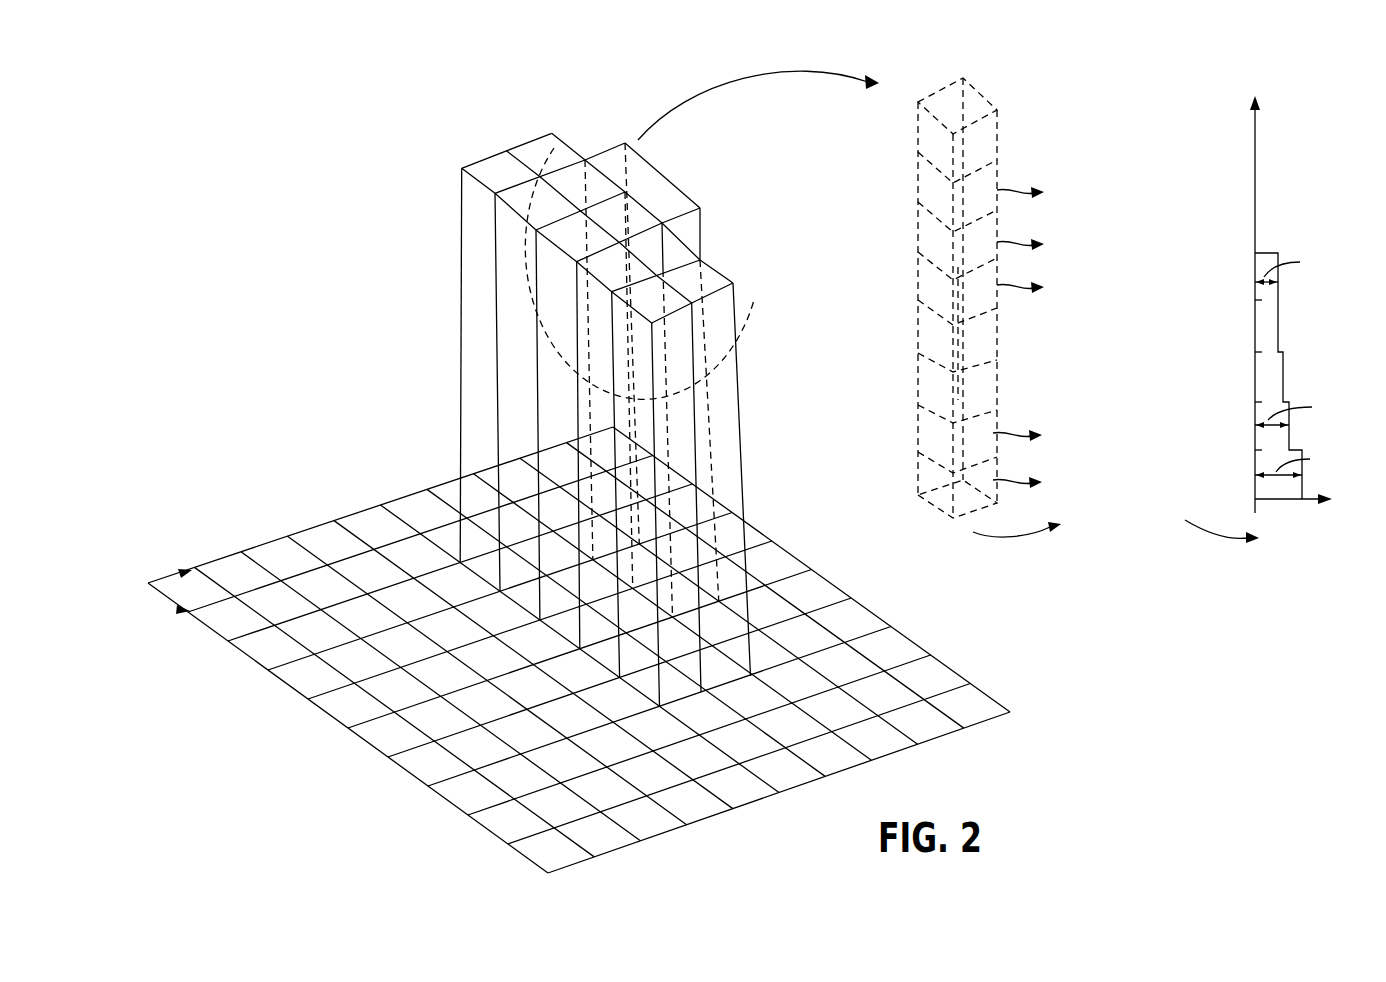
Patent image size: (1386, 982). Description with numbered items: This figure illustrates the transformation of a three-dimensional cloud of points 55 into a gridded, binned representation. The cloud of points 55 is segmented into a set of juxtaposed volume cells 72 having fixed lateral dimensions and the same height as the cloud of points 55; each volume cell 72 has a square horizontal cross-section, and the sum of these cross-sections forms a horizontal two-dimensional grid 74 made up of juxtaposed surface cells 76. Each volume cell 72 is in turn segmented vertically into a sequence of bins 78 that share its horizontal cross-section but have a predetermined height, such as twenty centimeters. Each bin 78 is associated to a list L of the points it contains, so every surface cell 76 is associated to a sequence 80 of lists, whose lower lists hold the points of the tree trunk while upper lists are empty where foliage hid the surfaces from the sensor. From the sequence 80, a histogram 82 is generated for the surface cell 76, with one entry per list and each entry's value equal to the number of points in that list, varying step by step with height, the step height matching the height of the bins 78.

The 3D cloud of points 55 is at (368, 241).
The volume cell 72 is at (516, 141).
The horizontal 2D grid 74 is at (748, 825).
The surface cell 76 is at (927, 728).
The bin 78 is at (927, 243).
The sequence of lists 80 is at (1183, 97).
The histogram 82 is at (1265, 148).